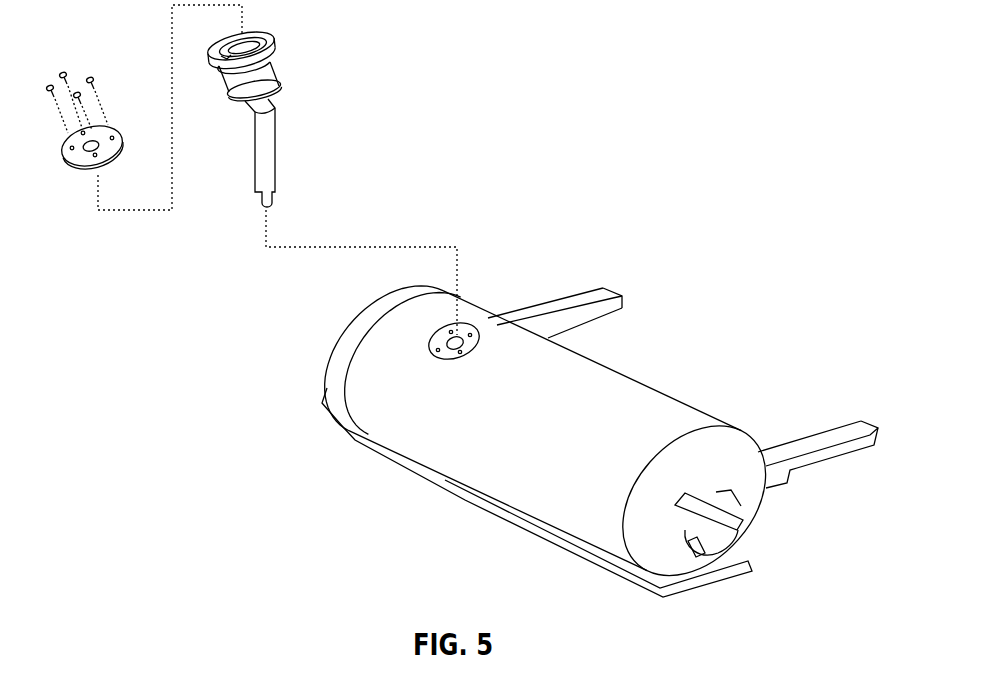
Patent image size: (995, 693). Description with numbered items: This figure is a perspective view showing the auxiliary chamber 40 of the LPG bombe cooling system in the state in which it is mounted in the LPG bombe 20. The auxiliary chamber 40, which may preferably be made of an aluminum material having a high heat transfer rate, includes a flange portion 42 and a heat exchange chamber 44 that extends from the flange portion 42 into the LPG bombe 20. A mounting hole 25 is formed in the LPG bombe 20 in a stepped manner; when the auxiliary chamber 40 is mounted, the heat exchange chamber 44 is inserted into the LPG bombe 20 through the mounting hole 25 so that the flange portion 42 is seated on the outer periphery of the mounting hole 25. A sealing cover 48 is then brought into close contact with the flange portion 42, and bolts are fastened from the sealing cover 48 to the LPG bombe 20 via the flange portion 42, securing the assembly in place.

The LPG bombe 20 is at (626, 384).
The mounting hole 25 is at (456, 336).
The auxiliary chamber 40 is at (294, 117).
The flange portion 42 is at (278, 52).
The heat exchange chamber 44 is at (271, 137).
The sealing cover 48 is at (68, 163).